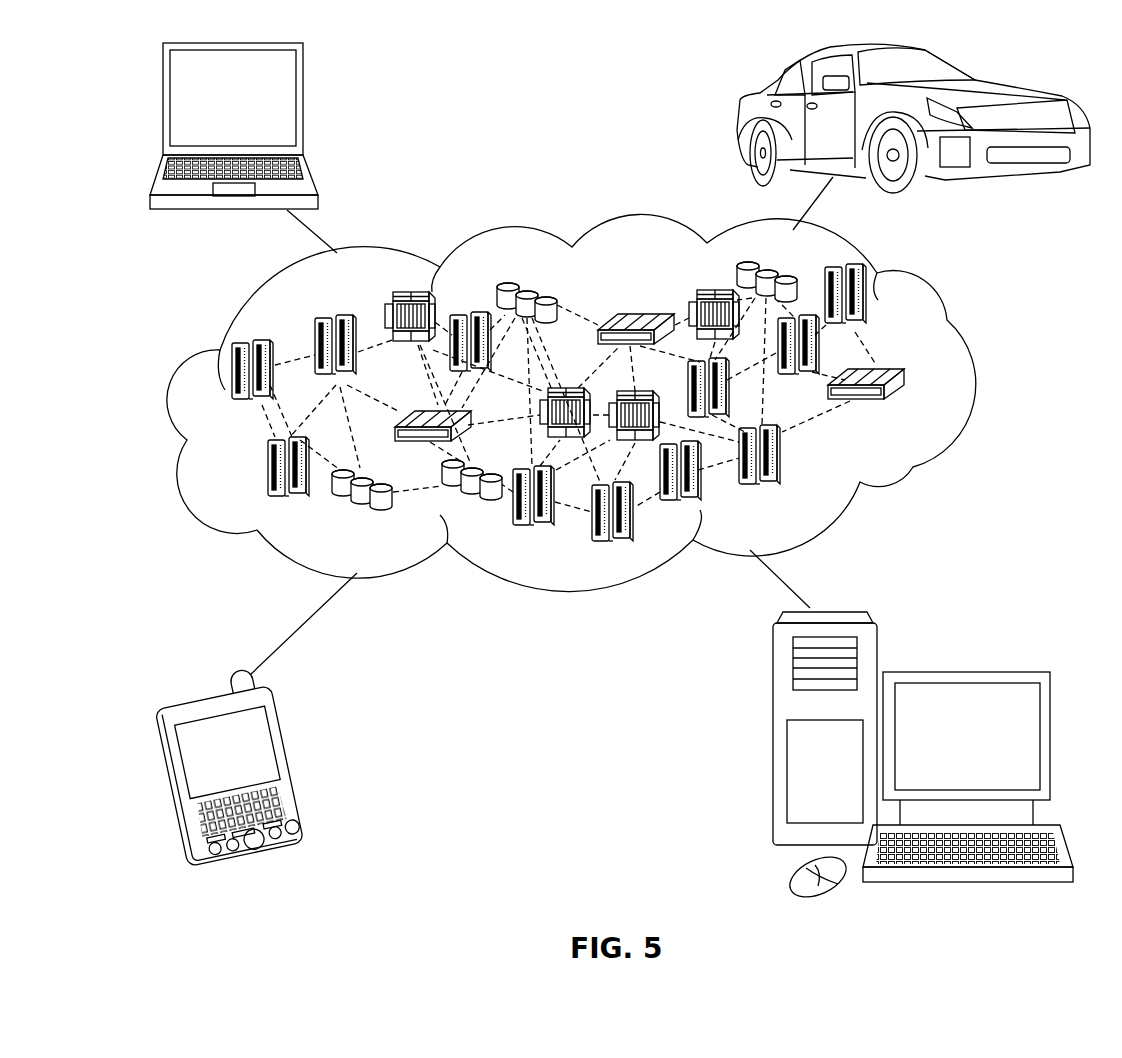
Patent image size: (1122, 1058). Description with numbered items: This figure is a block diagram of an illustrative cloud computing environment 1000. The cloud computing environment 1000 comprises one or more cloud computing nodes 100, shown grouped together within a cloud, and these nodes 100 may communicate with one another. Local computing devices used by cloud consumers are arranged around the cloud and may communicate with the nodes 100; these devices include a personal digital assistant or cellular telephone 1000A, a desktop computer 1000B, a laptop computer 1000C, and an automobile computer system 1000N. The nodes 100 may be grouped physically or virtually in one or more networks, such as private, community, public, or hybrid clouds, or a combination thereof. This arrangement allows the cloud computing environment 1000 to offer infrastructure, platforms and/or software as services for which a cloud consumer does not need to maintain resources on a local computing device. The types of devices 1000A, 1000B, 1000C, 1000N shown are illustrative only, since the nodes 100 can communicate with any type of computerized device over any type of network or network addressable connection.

The cloud computing nodes 100 is at (918, 415).
The cloud computing environment 1000 is at (963, 382).
The personal digital assistant (PDA) or cellular telephone 1000A is at (290, 765).
The desktop computer 1000B is at (964, 672).
The laptop computer 1000C is at (303, 105).
The automobile computer system 1000N is at (745, 118).